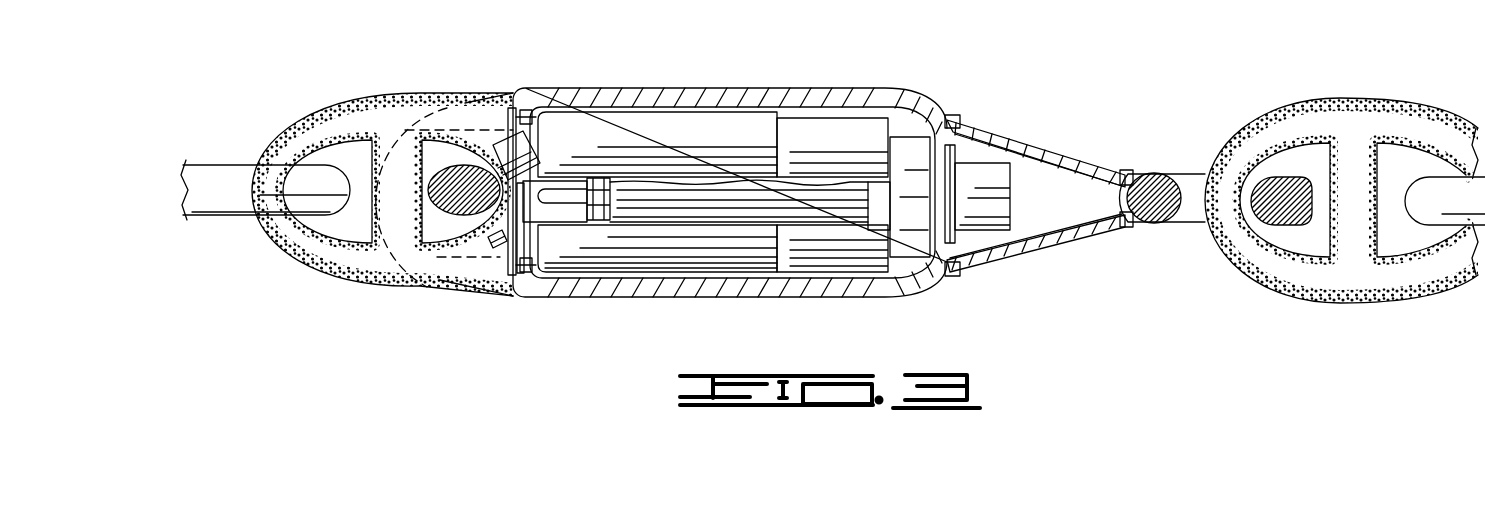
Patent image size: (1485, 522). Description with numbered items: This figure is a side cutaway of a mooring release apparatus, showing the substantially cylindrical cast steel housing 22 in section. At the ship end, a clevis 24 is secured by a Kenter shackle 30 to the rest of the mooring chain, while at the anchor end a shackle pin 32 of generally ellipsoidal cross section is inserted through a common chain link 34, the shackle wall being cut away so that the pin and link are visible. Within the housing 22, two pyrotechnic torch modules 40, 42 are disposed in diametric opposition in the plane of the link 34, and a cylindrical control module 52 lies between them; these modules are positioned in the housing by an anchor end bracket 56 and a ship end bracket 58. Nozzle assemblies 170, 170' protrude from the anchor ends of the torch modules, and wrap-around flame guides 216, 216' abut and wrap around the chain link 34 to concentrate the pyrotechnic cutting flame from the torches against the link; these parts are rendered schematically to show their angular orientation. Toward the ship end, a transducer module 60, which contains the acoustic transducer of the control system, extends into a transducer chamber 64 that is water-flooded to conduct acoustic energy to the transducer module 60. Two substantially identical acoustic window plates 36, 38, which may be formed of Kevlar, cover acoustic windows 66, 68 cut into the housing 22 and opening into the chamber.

The housing 22 is at (676, 97).
The clevis 24 is at (514, 128).
The Kenter shackle 30 is at (1348, 117).
The shackle pin 32 is at (460, 193).
The chain link 34 is at (348, 116).
The acoustic window plate 36 is at (1038, 145).
The acoustic window plate 38 is at (1075, 233).
The torch module 40 is at (804, 132).
The torch module 42 is at (807, 240).
The control module 52 is at (653, 190).
The anchor end bracket 56 is at (517, 197).
The ship end bracket 58 is at (910, 220).
The transducer module 60 is at (977, 176).
The transducer chamber 64 is at (1092, 202).
The acoustic window 66 is at (1020, 156).
The acoustic window 68 is at (1053, 237).
The nozzle assembly 170 is at (549, 80).
The nozzle assembly 170' is at (546, 297).
The flame guide 216 is at (458, 172).
The flame guide 216' is at (509, 292).